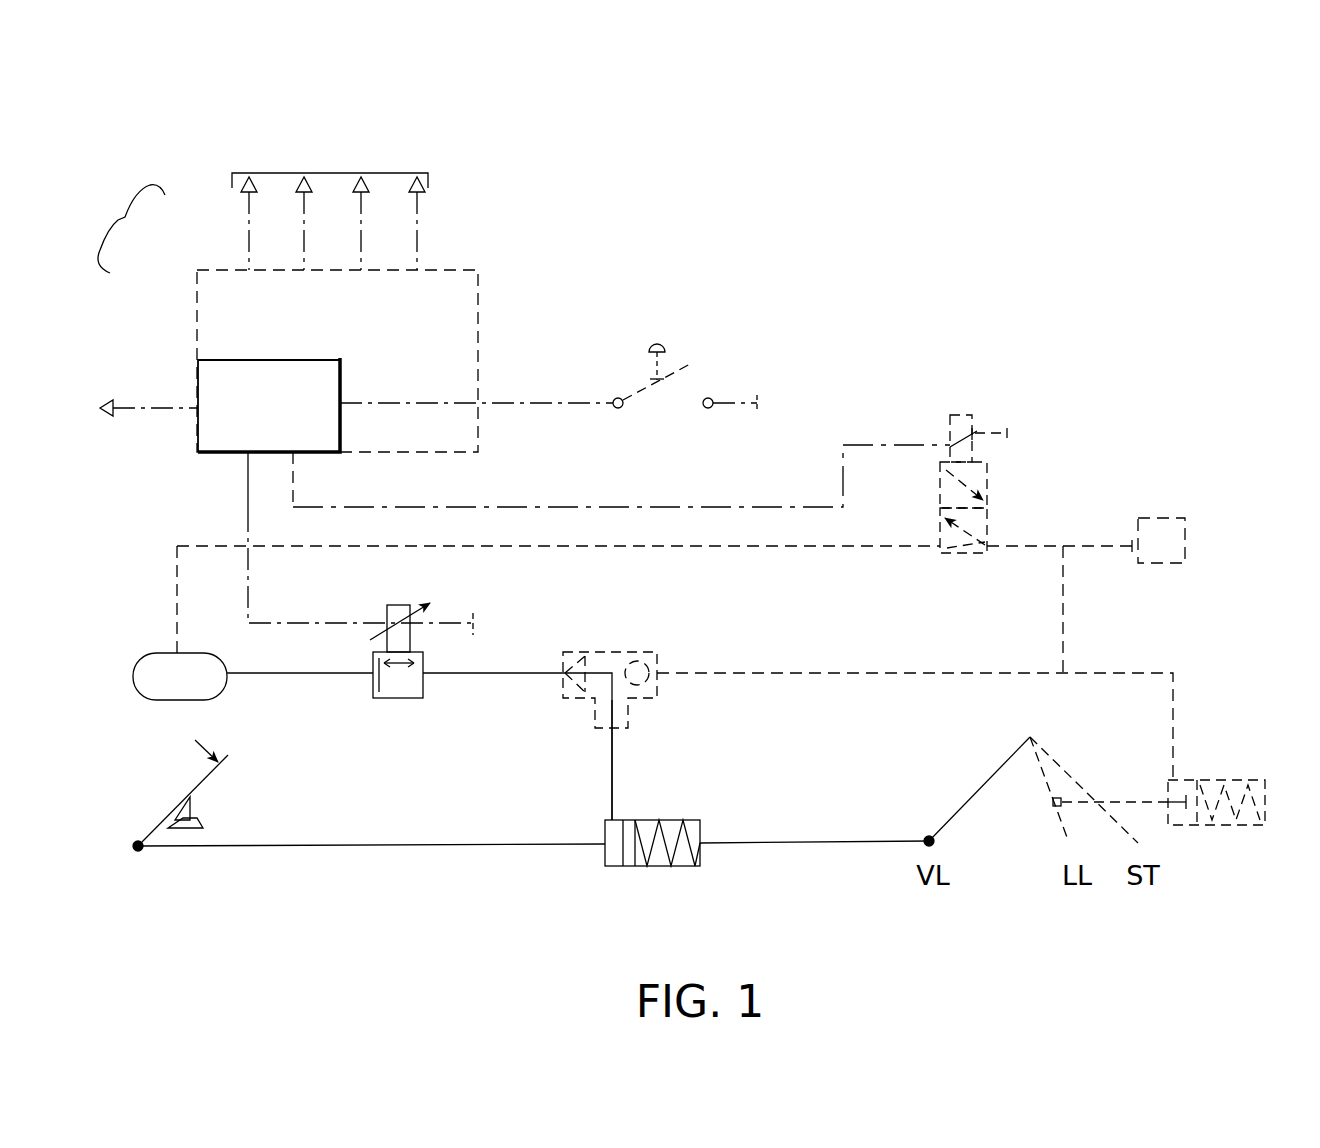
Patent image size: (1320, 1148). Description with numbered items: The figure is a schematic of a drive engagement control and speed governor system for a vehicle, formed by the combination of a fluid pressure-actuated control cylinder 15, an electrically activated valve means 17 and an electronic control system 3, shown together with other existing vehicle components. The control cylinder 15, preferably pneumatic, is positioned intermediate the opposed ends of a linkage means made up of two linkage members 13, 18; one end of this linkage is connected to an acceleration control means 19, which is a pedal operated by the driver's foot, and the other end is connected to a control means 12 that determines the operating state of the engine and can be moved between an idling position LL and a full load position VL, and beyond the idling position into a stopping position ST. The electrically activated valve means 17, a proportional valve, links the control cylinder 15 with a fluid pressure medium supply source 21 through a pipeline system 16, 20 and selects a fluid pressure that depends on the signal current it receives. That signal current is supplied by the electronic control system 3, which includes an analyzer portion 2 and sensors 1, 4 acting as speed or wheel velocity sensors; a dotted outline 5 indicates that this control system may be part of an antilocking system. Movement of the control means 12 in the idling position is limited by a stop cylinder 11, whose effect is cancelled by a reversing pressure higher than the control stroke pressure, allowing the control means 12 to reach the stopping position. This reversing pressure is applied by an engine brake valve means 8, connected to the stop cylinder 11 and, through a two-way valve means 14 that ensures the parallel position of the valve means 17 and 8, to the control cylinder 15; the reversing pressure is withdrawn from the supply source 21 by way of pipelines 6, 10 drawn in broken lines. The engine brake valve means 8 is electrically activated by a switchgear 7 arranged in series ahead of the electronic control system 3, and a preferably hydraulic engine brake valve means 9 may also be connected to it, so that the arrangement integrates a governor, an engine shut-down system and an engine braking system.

The sensor 1 is at (108, 403).
The analyzer portion 2 is at (208, 377).
The electronic control system 3 is at (126, 229).
The sensor 4 is at (232, 173).
The dotted outline 5 is at (480, 328).
The pipeline 6 is at (497, 546).
The switchgear 7 is at (678, 345).
The engine brake valve means 8 is at (973, 407).
The engine brake valve means 9 is at (1169, 511).
The pipeline 10 is at (1137, 672).
The stop cylinder 11 is at (1213, 777).
The control means 12 is at (985, 785).
The linkage member 13 is at (837, 843).
The two-way valve means 14 is at (667, 698).
The fluid pressure-actuated control cylinder 15 is at (595, 860).
The pipeline 16 is at (610, 750).
The electrically activated valve means 17 is at (402, 713).
The linkage member 18 is at (248, 846).
The acceleration control means 19 is at (172, 792).
The pipeline 20 is at (292, 673).
The fluid pressure medium supply source 21 is at (165, 670).